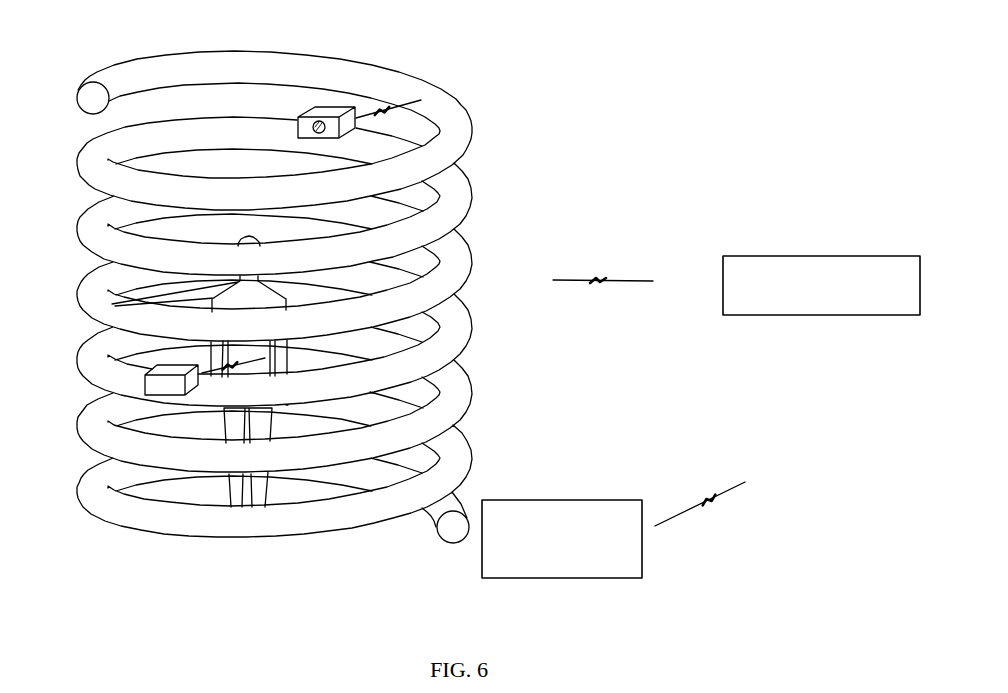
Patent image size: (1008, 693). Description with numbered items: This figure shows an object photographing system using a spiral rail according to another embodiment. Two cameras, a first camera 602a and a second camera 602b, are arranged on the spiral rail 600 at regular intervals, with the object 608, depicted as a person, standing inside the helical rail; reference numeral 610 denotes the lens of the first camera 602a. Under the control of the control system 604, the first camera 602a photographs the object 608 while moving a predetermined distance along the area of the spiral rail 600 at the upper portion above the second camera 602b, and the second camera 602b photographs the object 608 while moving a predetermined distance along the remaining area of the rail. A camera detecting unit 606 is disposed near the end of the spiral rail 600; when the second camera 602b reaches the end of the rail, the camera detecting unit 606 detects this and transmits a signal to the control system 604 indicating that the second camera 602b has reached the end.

The spiral rail 600 is at (77, 98).
The first camera 602a is at (352, 105).
The second camera 602b is at (145, 380).
The control system 604 is at (820, 256).
The camera detecting unit 606 is at (562, 500).
The object 608 is at (78, 302).
The lens 610 is at (316, 110).